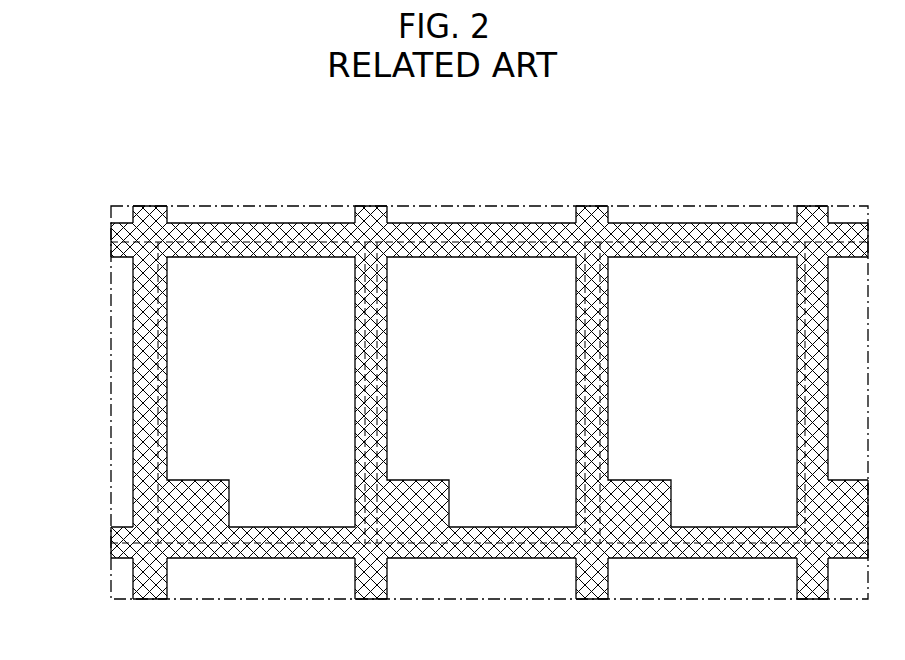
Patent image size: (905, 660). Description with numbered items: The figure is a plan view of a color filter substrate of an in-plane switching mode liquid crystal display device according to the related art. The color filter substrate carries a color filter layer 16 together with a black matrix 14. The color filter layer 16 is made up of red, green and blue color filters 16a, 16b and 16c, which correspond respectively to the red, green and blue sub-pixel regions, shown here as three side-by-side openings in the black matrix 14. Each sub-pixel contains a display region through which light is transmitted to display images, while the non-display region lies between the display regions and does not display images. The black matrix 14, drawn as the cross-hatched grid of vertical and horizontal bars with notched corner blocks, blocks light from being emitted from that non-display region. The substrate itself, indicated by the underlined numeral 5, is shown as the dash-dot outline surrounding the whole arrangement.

The black matrix 14 is at (135, 291).
The color filter layer 16 is at (426, 123).
The red color filter 16a is at (265, 285).
The green color filter 16b is at (458, 295).
The blue color filter 16c is at (636, 270).
The substrate 5 is at (780, 587).